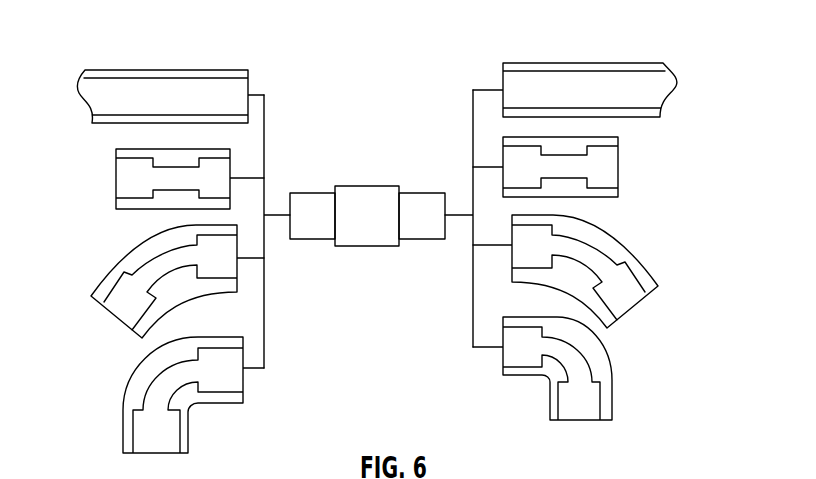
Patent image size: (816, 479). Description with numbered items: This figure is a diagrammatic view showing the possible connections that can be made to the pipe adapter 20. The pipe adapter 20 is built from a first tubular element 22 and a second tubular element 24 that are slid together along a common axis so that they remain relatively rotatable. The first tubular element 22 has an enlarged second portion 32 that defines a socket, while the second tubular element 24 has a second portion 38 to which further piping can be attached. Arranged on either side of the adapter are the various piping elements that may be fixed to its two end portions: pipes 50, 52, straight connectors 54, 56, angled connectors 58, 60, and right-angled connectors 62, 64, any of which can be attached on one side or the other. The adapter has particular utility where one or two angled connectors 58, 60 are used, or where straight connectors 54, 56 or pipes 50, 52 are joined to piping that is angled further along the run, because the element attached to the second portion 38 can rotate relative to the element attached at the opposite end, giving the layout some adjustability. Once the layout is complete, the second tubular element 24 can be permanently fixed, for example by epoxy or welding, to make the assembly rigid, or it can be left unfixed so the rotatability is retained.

The pipe adapter 20 is at (369, 202).
The first tubular element 22 is at (303, 193).
The second tubular element 24 is at (418, 193).
The second portion 32 is at (362, 246).
The second portion 38 is at (371, 186).
The pipe 50 is at (556, 67).
The pipe 52 is at (188, 70).
The straight connector 54 is at (576, 137).
The straight connector 56 is at (203, 149).
The angled connector 58 is at (617, 236).
The angled connector 60 is at (150, 235).
The right-angled connector 62 is at (612, 372).
The right-angled connector 64 is at (175, 336).